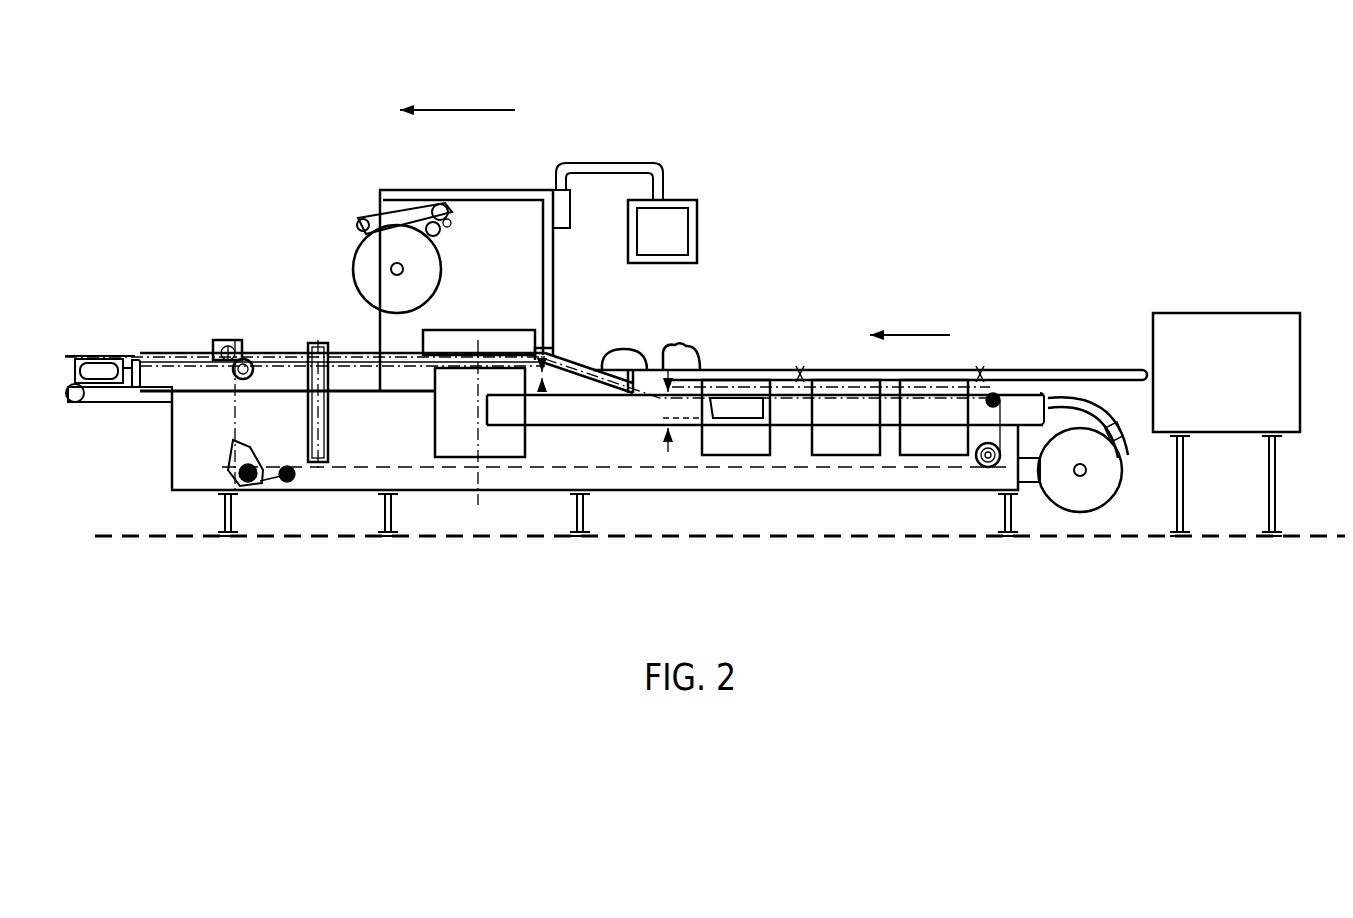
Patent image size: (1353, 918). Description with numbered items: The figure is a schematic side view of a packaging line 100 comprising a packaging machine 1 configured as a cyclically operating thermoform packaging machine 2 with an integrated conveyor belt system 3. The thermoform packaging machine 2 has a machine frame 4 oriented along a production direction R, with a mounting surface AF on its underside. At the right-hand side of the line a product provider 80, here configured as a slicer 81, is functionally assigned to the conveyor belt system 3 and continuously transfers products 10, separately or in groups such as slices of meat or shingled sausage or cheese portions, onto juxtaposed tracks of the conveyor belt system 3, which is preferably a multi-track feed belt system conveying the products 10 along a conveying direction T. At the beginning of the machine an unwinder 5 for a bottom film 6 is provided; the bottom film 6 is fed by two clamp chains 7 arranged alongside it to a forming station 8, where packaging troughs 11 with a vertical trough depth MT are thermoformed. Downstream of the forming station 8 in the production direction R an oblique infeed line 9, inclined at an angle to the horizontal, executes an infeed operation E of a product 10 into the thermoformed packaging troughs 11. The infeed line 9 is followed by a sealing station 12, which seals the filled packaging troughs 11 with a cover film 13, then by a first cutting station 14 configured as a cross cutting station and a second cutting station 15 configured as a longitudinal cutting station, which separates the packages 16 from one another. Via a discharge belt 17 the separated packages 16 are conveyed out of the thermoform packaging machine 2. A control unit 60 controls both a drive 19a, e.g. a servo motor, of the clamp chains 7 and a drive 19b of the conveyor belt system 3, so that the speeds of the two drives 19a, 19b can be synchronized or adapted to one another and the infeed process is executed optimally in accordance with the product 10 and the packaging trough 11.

The packaging line 100 is at (803, 100).
The packaging machine 1 is at (1018, 272).
The thermoform packaging machine 2 is at (477, 515).
The conveyor belt system 3 is at (757, 367).
The machine frame 4 is at (228, 512).
The unwinder 5 is at (1108, 470).
The bottom film 6 is at (1080, 398).
The clamp chains 7 is at (835, 470).
The forming station 8 is at (712, 440).
The infeed line 9 is at (622, 412).
The product 10 is at (688, 344).
The packaging trough 11 is at (765, 407).
The sealing station 12 is at (430, 343).
The cover film 13 is at (543, 250).
The first cutting station 14 is at (313, 342).
The second cutting station 15 is at (225, 340).
The packages 16 is at (85, 352).
The discharge belt 17 is at (103, 395).
The drive of the clamp chains 19a is at (253, 480).
The drive of the conveyor belt system 19b is at (636, 355).
The control unit 60 is at (680, 228).
The product provider 80 is at (1240, 305).
The slicer 81 is at (1215, 384).
The production direction R is at (462, 110).
The conveying direction T is at (910, 333).
The infeed operation E is at (600, 345).
The vertical trough depth MT is at (667, 440).
The mounting surface AF is at (1012, 540).